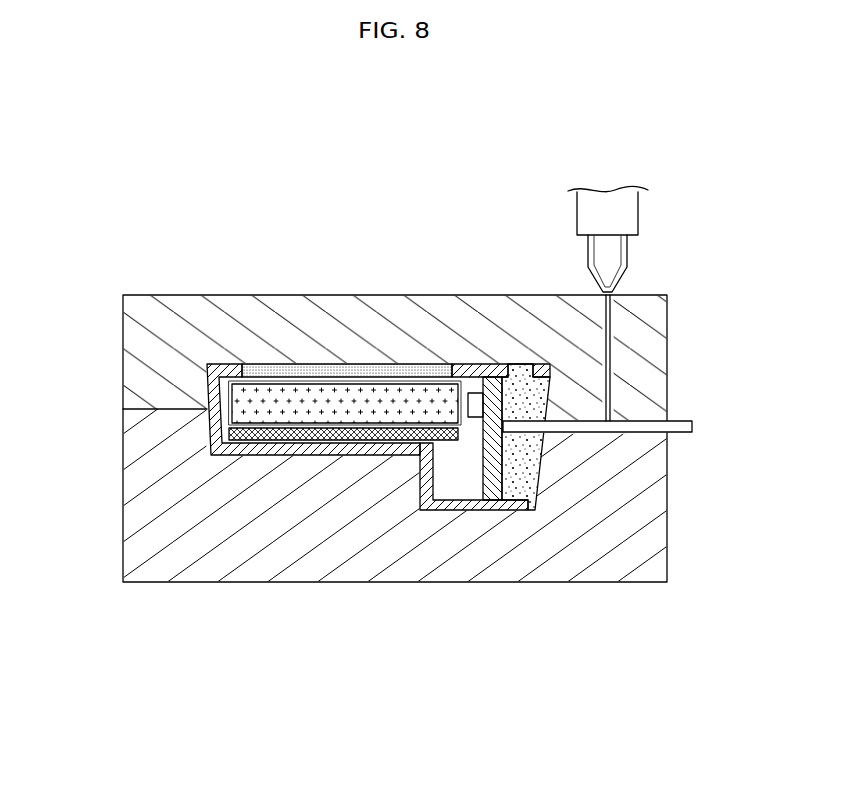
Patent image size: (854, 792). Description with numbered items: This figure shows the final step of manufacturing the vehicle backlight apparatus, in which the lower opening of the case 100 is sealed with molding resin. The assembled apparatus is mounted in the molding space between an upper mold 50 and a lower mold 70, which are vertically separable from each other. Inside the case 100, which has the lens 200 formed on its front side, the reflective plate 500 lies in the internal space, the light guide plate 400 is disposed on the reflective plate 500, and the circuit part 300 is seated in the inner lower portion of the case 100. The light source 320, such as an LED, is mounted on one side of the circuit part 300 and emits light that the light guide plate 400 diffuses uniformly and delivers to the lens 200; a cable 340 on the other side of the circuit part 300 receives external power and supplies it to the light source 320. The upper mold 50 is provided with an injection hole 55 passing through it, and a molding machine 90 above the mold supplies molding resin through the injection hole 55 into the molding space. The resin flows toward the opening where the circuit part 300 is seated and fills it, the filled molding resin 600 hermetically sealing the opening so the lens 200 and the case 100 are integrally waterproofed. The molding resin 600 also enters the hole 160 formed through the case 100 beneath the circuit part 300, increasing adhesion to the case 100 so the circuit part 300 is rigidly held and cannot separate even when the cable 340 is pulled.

The upper mold 50 is at (150, 308).
The lower mold 70 is at (166, 566).
The case 100 is at (219, 370).
The lens 200 is at (277, 373).
The light guide plate 400 is at (238, 411).
The reflective plate 500 is at (302, 432).
The light source 320 is at (470, 395).
The circuit part 300 is at (490, 387).
The sealing resin 600 is at (527, 462).
The hole 160 is at (532, 370).
The cable 340 is at (630, 428).
The injection hole 55 is at (607, 340).
The molding machine 90 is at (615, 207).